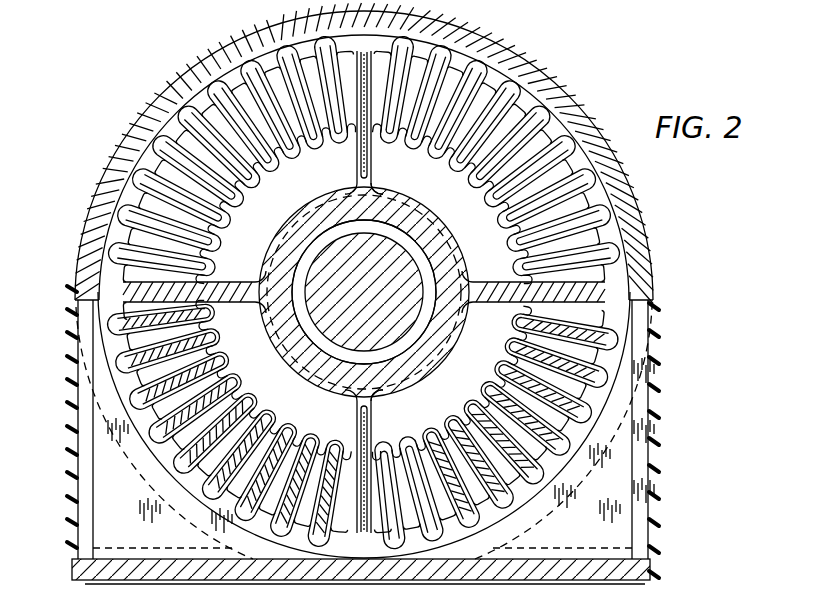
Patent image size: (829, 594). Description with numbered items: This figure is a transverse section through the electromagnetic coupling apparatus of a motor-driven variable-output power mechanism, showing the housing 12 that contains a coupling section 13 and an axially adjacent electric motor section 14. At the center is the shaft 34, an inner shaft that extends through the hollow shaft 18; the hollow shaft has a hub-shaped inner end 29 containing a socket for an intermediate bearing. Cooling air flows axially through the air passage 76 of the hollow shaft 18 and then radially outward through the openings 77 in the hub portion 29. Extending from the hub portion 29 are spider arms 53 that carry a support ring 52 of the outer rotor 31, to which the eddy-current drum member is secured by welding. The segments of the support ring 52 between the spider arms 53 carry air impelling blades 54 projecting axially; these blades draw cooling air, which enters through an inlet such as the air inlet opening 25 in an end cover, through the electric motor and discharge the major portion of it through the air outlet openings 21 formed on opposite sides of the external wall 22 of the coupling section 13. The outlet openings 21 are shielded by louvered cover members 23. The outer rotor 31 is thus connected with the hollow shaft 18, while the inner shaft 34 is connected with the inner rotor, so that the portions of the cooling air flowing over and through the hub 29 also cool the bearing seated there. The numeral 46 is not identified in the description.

The housing 12 is at (642, 190).
The coupling section 13 is at (637, 222).
The electric motor section 14 is at (646, 249).
The outer rotor 31 is at (612, 274).
The external wall 22 is at (85, 258).
The air outlet openings 21 is at (85, 413).
The louvered cover members 23 is at (70, 445).
The support ring 52 is at (540, 143).
The air impelling blades 54 is at (520, 80).
The spider arms 53 is at (357, 167).
The hub-shaped inner end 29 is at (385, 198).
The openings 77 is at (430, 247).
The air passage 76 is at (300, 313).
The shaft 34 is at (407, 313).
The hollow shaft 18 is at (330, 393).
The base plate 46 is at (361, 576).
The air inlet opening 25 is at (365, 588).